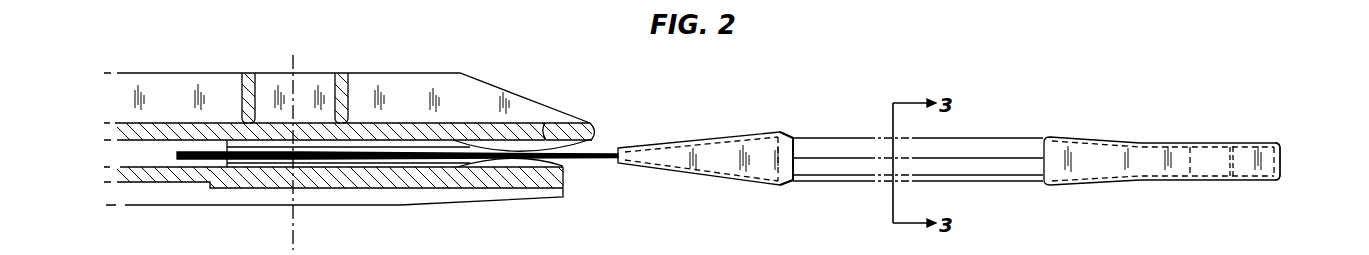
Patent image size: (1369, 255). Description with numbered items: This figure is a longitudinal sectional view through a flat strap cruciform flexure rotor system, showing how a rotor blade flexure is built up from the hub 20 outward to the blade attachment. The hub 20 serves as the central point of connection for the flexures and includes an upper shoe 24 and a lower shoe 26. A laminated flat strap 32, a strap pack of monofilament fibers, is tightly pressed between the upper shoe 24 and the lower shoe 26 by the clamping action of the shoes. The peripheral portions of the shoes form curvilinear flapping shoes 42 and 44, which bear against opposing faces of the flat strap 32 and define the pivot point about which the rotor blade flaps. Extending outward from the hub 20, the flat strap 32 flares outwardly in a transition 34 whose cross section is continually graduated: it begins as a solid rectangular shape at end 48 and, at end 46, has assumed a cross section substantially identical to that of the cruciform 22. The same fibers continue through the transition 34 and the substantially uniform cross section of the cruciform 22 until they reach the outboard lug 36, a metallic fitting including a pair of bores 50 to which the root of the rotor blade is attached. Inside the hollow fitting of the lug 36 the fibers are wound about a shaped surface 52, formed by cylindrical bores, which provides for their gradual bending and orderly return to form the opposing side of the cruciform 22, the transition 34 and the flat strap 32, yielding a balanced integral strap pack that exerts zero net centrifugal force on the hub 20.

The hub 20 is at (553, 70).
The flat strap cruciform flexure 22 is at (833, 97).
The upper shoe 24 is at (143, 129).
The lower shoe 26 is at (265, 188).
The laminated flat strap 32 is at (420, 164).
The transition 34 is at (738, 160).
The outboard lug 36 is at (1270, 146).
The flapping shoe 42 is at (547, 138).
The flapping shoe 44 is at (528, 165).
The end of transition 46 is at (803, 139).
The end of transition 48 is at (607, 150).
The bore 50 is at (1200, 150).
The shaped surface 52 is at (1259, 146).